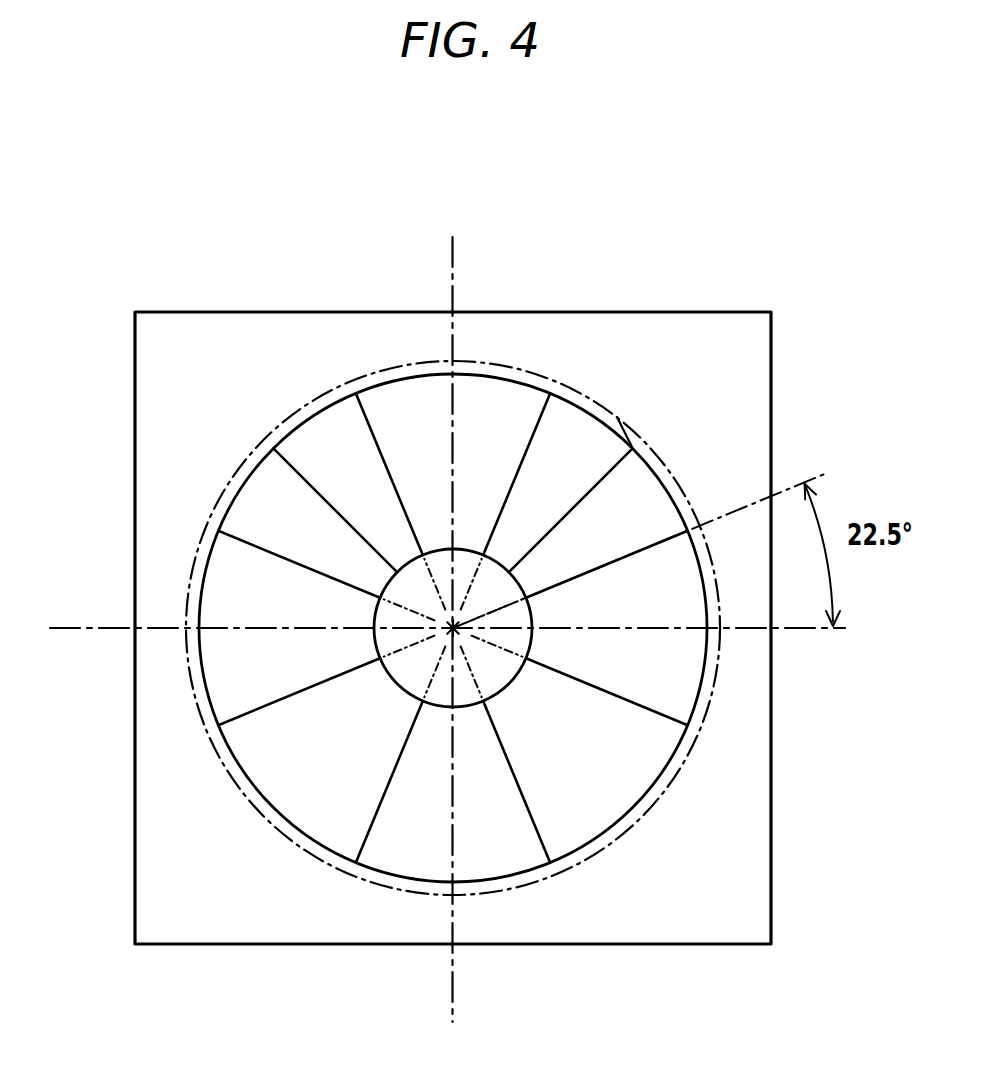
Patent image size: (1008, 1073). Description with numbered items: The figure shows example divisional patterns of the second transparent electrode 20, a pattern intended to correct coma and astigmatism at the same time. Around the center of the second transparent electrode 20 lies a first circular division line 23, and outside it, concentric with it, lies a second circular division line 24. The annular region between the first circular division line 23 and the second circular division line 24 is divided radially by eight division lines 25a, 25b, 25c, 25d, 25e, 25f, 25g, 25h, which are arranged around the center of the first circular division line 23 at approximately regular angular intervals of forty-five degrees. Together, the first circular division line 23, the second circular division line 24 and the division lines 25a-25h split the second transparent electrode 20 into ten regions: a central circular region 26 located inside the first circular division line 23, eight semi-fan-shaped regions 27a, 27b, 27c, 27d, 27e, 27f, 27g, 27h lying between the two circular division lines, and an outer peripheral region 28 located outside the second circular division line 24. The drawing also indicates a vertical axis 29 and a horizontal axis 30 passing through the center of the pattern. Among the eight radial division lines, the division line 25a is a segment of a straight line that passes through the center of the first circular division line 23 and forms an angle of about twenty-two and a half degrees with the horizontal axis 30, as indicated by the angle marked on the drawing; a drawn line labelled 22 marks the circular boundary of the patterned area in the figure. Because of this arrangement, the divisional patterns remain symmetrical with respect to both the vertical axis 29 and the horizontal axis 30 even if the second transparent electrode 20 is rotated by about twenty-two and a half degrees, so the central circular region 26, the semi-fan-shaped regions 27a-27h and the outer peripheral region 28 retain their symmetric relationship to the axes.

The second transparent electrode 20 is at (773, 903).
The circular outer edge 22 is at (476, 359).
The first circular division line 23 is at (633, 448).
The second circular division line 24 is at (617, 417).
The division line 25a is at (642, 550).
The division line 25b is at (531, 438).
The division line 25c is at (375, 438).
The division line 25d is at (264, 549).
The division line 25e is at (264, 706).
The division line 25f is at (374, 817).
The division line 25g is at (531, 818).
The division line 25h is at (642, 707).
The central circular region 26 is at (273, 448).
The semi-fan-shaped region 27a is at (570, 447).
The semi-fan-shaped region 27b is at (413, 410).
The semi-fan-shaped region 27c is at (310, 450).
The semi-fan-shaped region 27d is at (232, 607).
The semi-fan-shaped region 27e is at (293, 775).
The semi-fan-shaped region 27f is at (415, 855).
The semi-fan-shaped region 27g is at (605, 798).
The semi-fan-shaped region 27h is at (677, 667).
The outer peripheral region 28 is at (153, 457).
The vertical axis 29 is at (452, 282).
The horizontal axis 30 is at (812, 628).